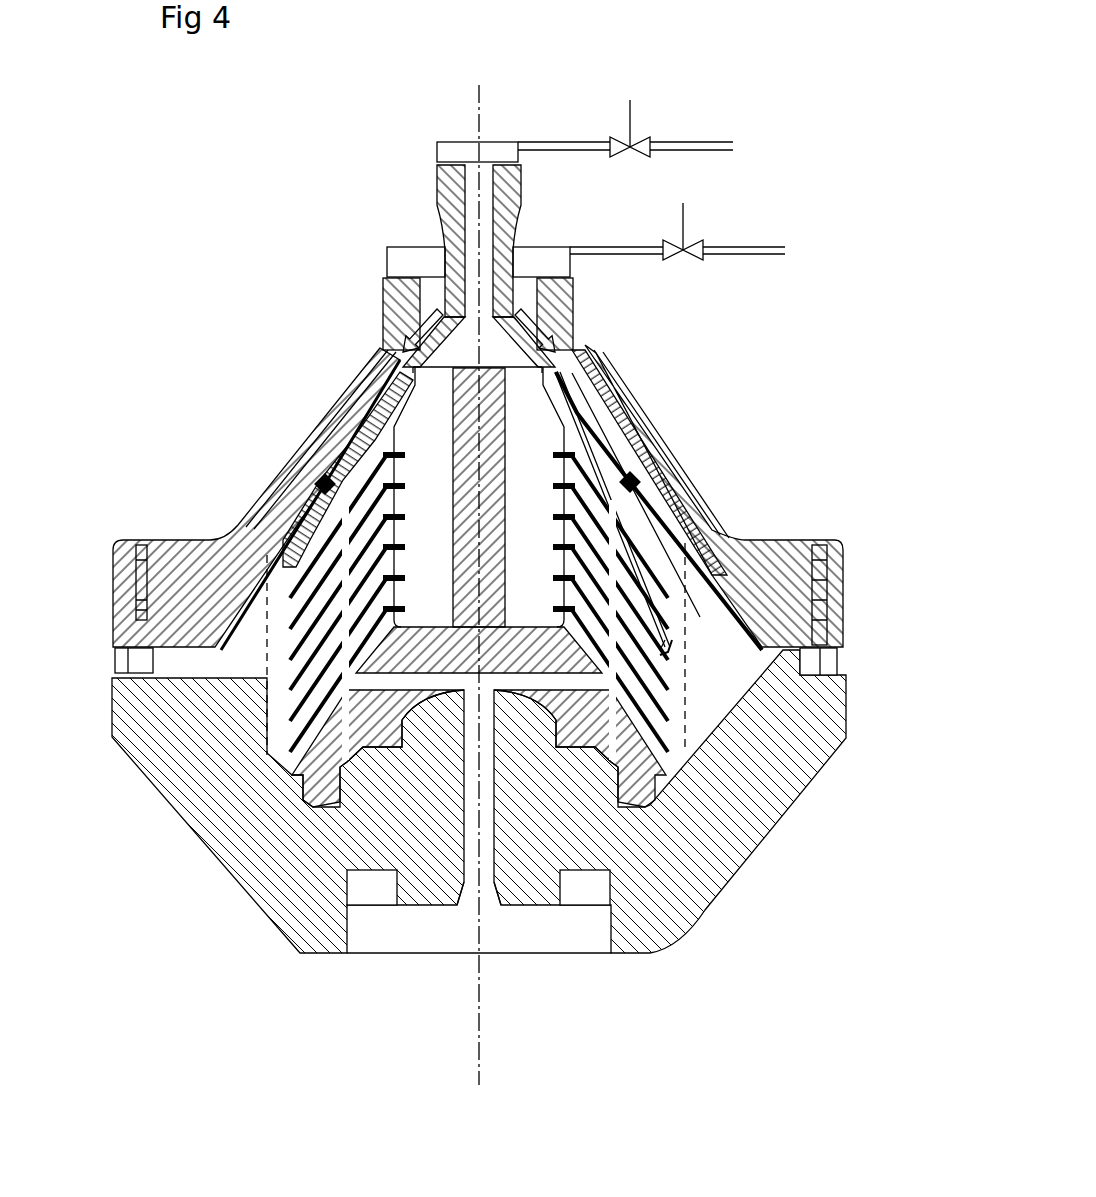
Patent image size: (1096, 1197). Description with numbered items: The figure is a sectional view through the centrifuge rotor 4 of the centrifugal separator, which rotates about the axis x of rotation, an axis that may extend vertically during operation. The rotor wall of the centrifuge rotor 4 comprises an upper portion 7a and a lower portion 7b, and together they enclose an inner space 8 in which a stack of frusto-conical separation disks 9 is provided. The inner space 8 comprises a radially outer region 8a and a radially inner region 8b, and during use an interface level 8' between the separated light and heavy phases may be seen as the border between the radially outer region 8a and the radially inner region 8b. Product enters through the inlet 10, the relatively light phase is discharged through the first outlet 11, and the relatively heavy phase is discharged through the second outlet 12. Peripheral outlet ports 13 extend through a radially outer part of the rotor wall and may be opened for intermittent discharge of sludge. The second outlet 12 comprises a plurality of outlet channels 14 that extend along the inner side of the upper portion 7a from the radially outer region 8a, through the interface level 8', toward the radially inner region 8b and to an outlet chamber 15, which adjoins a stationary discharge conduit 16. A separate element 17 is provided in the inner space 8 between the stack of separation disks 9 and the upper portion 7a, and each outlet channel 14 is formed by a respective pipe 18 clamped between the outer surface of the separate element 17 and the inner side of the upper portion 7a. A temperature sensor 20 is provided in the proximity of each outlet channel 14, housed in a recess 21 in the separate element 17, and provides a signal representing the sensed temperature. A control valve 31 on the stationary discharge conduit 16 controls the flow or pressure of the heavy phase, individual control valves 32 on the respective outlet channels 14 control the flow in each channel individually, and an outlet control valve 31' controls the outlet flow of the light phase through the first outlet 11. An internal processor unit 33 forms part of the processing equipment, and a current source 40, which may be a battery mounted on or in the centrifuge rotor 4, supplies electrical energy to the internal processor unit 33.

The axis of rotation x is at (480, 92).
The centrifuge rotor 4 is at (355, 367).
The upper portion of the rotor wall 7a is at (272, 519).
The lower portion of the rotor wall 7b is at (205, 825).
The inner space 8 is at (250, 655).
The interface level 8' is at (165, 717).
The radially outer region 8a is at (745, 672).
The radially inner region 8b is at (655, 662).
The stack of frusto-conical separation disks 9 is at (660, 652).
The inlet 10 is at (472, 872).
The first outlet 11 is at (470, 205).
The second outlet 12 is at (426, 300).
The peripheral outlet ports 13 is at (128, 660).
The outlet channels 14 is at (365, 415).
The outlet chamber 15 is at (553, 292).
The stationary discharge conduit 16 is at (570, 250).
The separate element 17 is at (625, 410).
The pipe 18 is at (280, 610).
The temperature sensor 20 is at (325, 484).
The recess 21 is at (645, 510).
The control valve 31 is at (714, 218).
The outlet control valve 31' is at (640, 113).
The individual control valves 32 is at (420, 338).
The internal processor unit 33 is at (377, 893).
The current source 40 is at (585, 890).